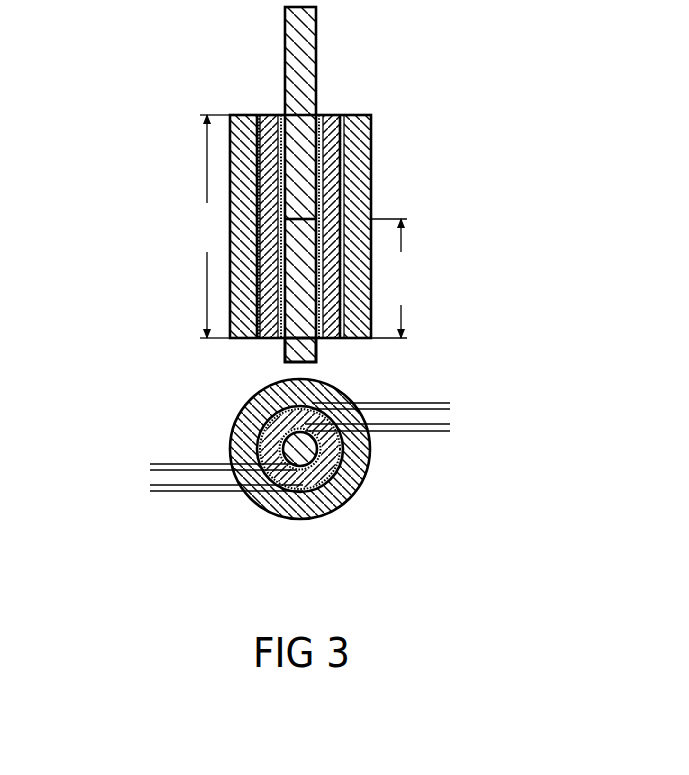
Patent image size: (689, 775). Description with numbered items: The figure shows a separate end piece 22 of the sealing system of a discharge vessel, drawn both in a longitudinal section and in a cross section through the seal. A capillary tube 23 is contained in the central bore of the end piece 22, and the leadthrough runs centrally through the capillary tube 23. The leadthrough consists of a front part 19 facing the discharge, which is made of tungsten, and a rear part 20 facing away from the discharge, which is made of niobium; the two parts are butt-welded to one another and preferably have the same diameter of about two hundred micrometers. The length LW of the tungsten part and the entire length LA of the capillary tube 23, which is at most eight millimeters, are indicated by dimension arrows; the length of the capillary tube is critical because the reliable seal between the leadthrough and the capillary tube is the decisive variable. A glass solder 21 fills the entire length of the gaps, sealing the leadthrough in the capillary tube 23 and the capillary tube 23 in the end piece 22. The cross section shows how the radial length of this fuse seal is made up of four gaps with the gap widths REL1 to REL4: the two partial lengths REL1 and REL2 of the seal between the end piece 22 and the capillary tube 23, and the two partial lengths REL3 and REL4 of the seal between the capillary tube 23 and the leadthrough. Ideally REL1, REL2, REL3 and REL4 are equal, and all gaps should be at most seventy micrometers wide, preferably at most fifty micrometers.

The front part 19 is at (285, 351).
The rear part 20 is at (306, 34).
The glass solder 21 is at (272, 115).
The end piece 22 is at (371, 187).
The capillary tube 23 is at (343, 143).
The length of the capillary tube LA is at (203, 226).
The length of the W part LW is at (399, 278).
The gap width REL1 is at (426, 396).
The gap width REL2 is at (179, 495).
The gap width REL3 is at (422, 436).
The gap width REL4 is at (176, 458).